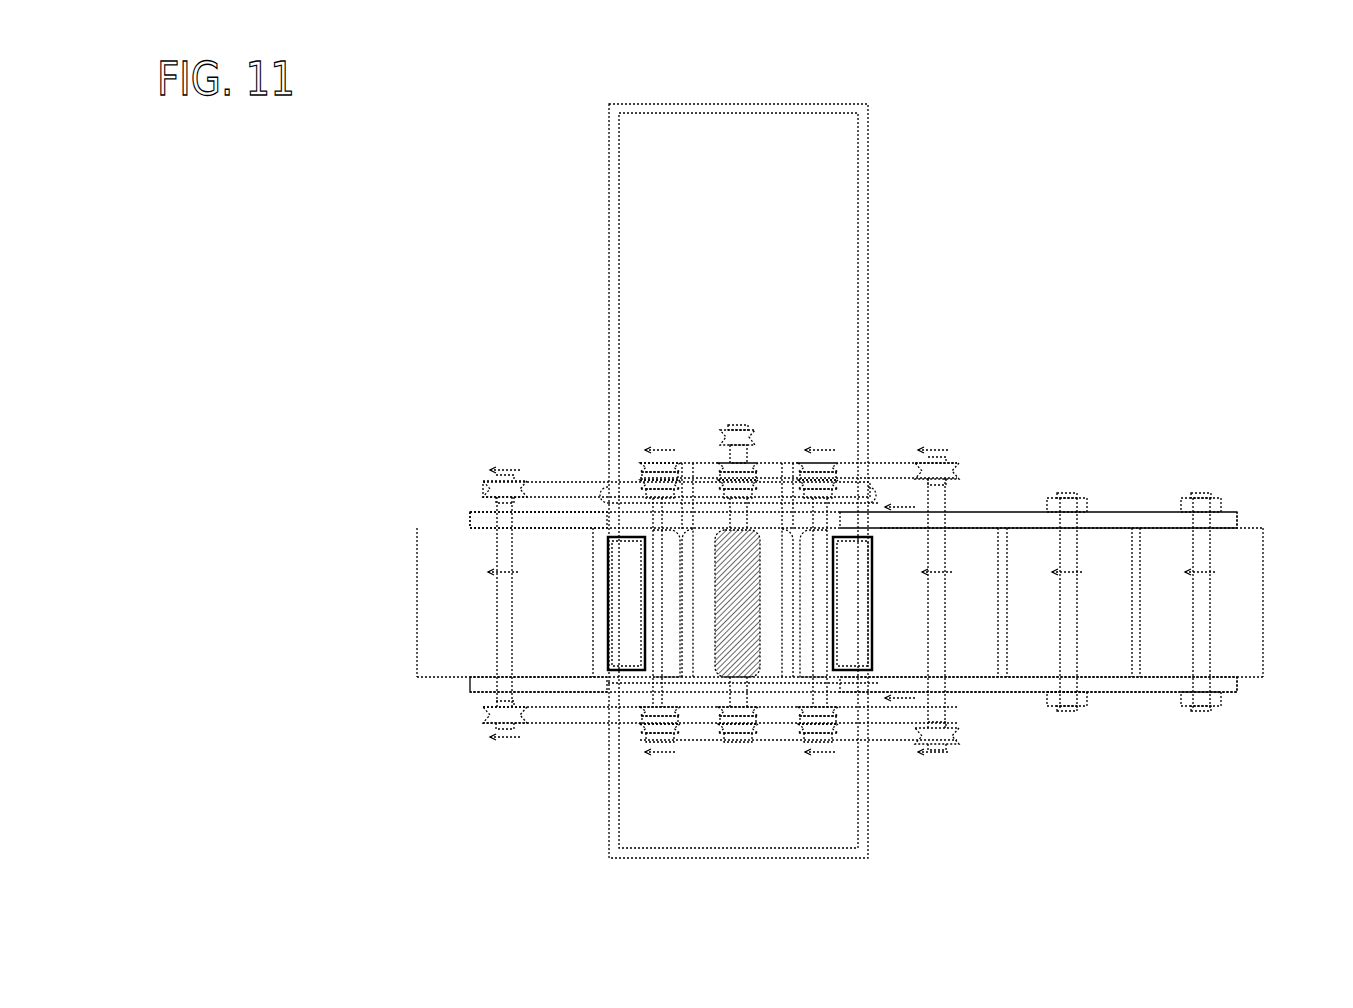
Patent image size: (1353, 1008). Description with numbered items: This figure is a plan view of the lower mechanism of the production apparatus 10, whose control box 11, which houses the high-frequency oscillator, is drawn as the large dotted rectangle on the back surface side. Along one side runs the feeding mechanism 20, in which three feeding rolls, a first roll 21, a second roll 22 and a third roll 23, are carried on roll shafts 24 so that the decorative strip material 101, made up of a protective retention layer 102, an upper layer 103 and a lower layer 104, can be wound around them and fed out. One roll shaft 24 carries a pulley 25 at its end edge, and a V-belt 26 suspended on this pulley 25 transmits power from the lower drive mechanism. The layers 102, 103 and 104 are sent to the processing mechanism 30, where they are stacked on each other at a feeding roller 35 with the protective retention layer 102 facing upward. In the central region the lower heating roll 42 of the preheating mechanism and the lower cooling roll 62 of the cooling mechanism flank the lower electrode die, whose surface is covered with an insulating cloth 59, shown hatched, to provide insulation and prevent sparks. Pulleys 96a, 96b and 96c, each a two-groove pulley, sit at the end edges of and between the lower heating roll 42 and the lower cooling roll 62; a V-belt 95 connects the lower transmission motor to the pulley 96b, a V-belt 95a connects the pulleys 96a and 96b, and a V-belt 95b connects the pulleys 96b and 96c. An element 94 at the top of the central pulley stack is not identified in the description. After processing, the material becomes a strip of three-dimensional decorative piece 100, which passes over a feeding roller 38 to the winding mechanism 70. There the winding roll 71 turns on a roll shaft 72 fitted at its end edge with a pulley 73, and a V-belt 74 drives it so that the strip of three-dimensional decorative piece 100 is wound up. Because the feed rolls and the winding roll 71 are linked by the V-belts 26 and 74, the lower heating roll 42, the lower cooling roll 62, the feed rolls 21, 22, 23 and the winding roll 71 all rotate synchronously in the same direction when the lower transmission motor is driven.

The production apparatus 10 is at (985, 322).
The control box 11 is at (850, 265).
The feeding mechanism 20 is at (1146, 447).
The first roll 21 is at (1207, 548).
The second roll 22 is at (1072, 545).
The third roll 23 is at (938, 545).
The roll shaft 24 is at (1067, 495).
The pulley 25 is at (953, 472).
The V-belt 26 is at (905, 470).
The processing mechanism 30 is at (845, 365).
The feeding roller 35 is at (852, 655).
The feeding roller 38 is at (620, 640).
The lower heating roll 42 is at (800, 660).
The insulating cloth 59 is at (725, 660).
The lower cooling roll 62 is at (673, 660).
The winding mechanism 70 is at (492, 466).
The winding roll 71 is at (503, 632).
The roll shaft 72 is at (490, 717).
The pulley 73 is at (495, 488).
The V-belt 74 is at (560, 493).
The nut 94 is at (752, 460).
The V-belt 95 is at (718, 455).
The V-belt 95a is at (780, 488).
The V-belt 95b is at (700, 470).
The pulley 96a is at (832, 472).
The pulley 96b is at (757, 475).
The pulley 96c is at (643, 470).
The strip of three-dimensional decorative piece 100 is at (617, 640).
The decorative strip material 101 is at (870, 683).
The protective retention layer 102 is at (1238, 603).
The upper layer 103 is at (1090, 660).
The lower layer 104 is at (965, 665).